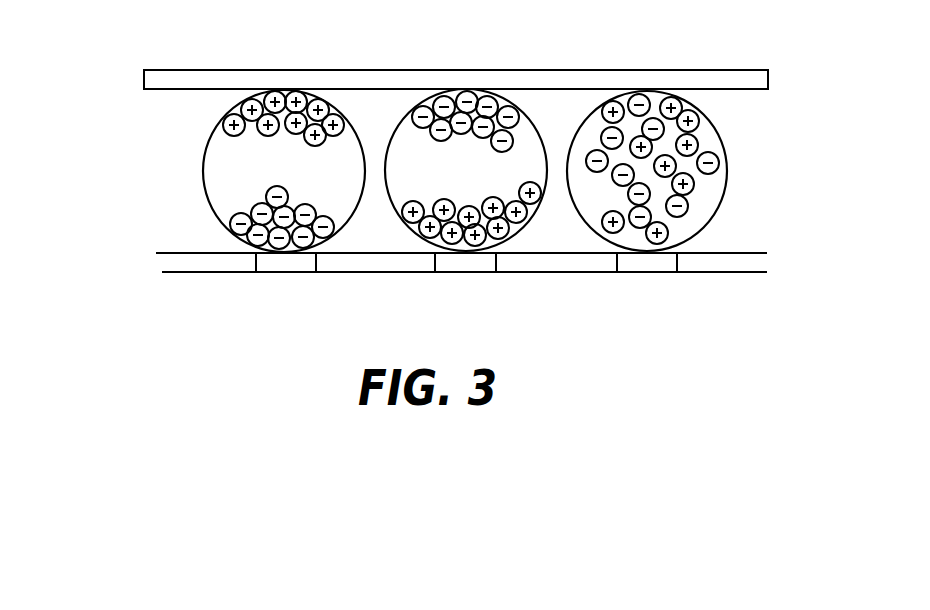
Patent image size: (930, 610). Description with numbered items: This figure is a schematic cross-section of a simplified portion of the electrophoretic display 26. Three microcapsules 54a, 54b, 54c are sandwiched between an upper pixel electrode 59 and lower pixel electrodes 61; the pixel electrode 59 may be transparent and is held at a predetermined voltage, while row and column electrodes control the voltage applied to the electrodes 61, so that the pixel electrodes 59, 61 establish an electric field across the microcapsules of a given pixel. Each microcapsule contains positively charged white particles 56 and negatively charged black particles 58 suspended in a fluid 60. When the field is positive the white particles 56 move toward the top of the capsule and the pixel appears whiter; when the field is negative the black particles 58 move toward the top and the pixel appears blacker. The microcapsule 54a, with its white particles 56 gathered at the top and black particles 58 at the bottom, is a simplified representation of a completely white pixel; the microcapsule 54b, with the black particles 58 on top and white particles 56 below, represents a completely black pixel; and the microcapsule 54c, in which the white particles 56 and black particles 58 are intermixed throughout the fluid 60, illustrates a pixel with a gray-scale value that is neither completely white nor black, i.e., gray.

The electrophoretic display 26 is at (103, 36).
The microcapsule 54a is at (236, 171).
The microcapsule 54b is at (424, 98).
The microcapsule 54c is at (698, 171).
The positively charged white particles 56 is at (230, 126).
The negatively charged black particles 58 is at (716, 165).
The pixel electrode 59 is at (592, 75).
The fluid 60 is at (703, 205).
The pixel electrodes 61 is at (293, 272).